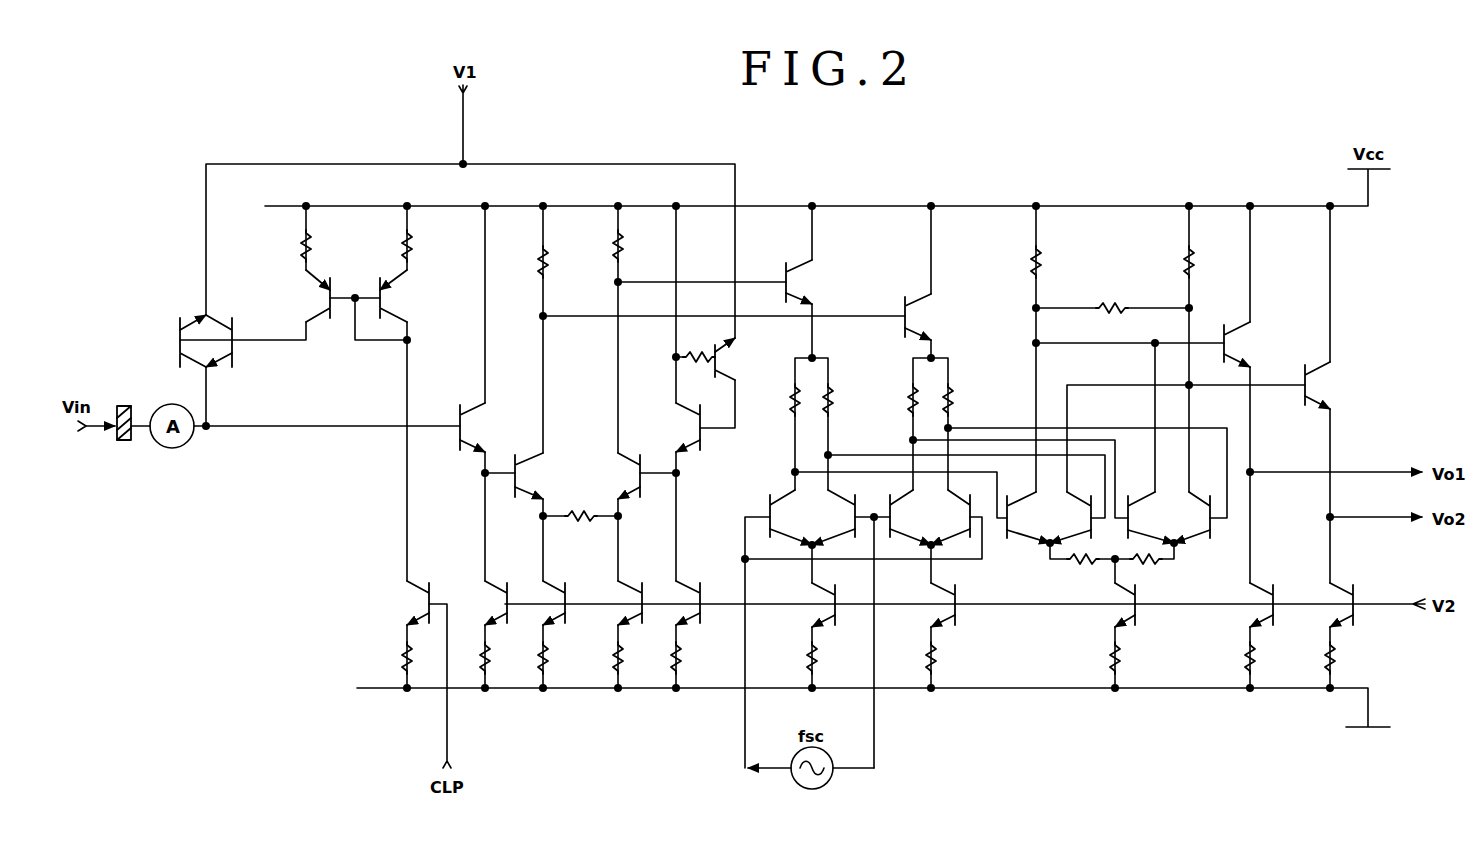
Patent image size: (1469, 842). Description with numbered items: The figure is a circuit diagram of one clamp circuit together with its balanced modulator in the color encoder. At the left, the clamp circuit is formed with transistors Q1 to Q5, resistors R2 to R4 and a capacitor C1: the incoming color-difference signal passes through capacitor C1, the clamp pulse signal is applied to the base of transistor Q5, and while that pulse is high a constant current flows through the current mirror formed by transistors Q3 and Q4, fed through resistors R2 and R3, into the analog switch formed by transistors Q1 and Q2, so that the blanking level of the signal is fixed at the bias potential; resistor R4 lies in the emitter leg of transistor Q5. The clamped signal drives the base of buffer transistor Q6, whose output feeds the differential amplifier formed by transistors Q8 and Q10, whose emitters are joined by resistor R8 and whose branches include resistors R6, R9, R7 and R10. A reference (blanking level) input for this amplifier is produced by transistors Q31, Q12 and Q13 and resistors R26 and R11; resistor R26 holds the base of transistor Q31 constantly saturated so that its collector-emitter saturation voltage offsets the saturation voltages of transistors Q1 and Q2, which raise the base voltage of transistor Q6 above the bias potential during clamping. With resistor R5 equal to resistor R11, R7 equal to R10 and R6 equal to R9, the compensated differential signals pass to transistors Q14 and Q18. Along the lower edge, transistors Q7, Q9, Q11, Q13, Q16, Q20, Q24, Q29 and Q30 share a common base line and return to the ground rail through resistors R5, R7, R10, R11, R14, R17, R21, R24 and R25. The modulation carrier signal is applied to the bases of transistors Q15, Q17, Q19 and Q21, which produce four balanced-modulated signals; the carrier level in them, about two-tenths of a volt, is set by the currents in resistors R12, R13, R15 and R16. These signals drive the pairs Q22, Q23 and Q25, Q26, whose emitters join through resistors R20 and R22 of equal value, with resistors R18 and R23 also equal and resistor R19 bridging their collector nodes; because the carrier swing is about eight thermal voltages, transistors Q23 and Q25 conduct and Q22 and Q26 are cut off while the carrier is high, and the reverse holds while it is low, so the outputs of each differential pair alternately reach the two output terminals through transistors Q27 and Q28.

The transistor Q1 is at (189, 329).
The transistor Q2 is at (224, 329).
The transistor Q3 is at (310, 296).
The transistor Q4 is at (403, 296).
The transistor Q5 is at (405, 603).
The transistor Q6 is at (481, 427).
The transistor Q7 is at (484, 603).
The transistor Q8 is at (542, 476).
The transistor Q9 is at (568, 603).
The transistor Q10 is at (615, 476).
The transistor Q11 is at (649, 603).
The transistor Q12 is at (676, 427).
The transistor Q13 is at (707, 603).
The transistor Q14 is at (817, 282).
The transistor Q15 is at (791, 517).
The transistor Q16 is at (843, 605).
The transistor Q17 is at (833, 517).
The transistor Q18 is at (936, 317).
The transistor Q19 is at (910, 517).
The transistor Q20 is at (962, 605).
The transistor Q21 is at (952, 517).
The transistor Q22 is at (1024, 509).
The transistor Q23 is at (1077, 509).
The transistor Q24 is at (1108, 605).
The transistor Q25 is at (1146, 509).
The transistor Q26 is at (1201, 509).
The transistor Q27 is at (1252, 344).
The transistor Q28 is at (1332, 385).
The transistor Q29 is at (1281, 605).
The transistor Q30 is at (1361, 605).
The transistor Q31 is at (744, 359).
The resistor R2 is at (321, 246).
The resistor R3 is at (422, 246).
The resistor R4 is at (419, 658).
The resistor R5 is at (497, 658).
The resistor R6 is at (557, 262).
The resistor R7 is at (556, 658).
The resistor R8 is at (581, 528).
The resistor R9 is at (633, 246).
The resistor R10 is at (637, 658).
The resistor R11 is at (695, 658).
The resistor R12 is at (779, 400).
The resistor R13 is at (847, 400).
The resistor R14 is at (831, 658).
The resistor R15 is at (897, 400).
The resistor R16 is at (967, 400).
The resistor R17 is at (950, 658).
The resistor R18 is at (1056, 262).
The resistor R19 is at (1111, 298).
The resistor R20 is at (1081, 573).
The resistor R21 is at (1134, 658).
The resistor R22 is at (1154, 573).
The resistor R23 is at (1209, 262).
The resistor R24 is at (1269, 658).
The resistor R25 is at (1349, 658).
The resistor R26 is at (697, 347).
The capacitor C1 is at (126, 410).